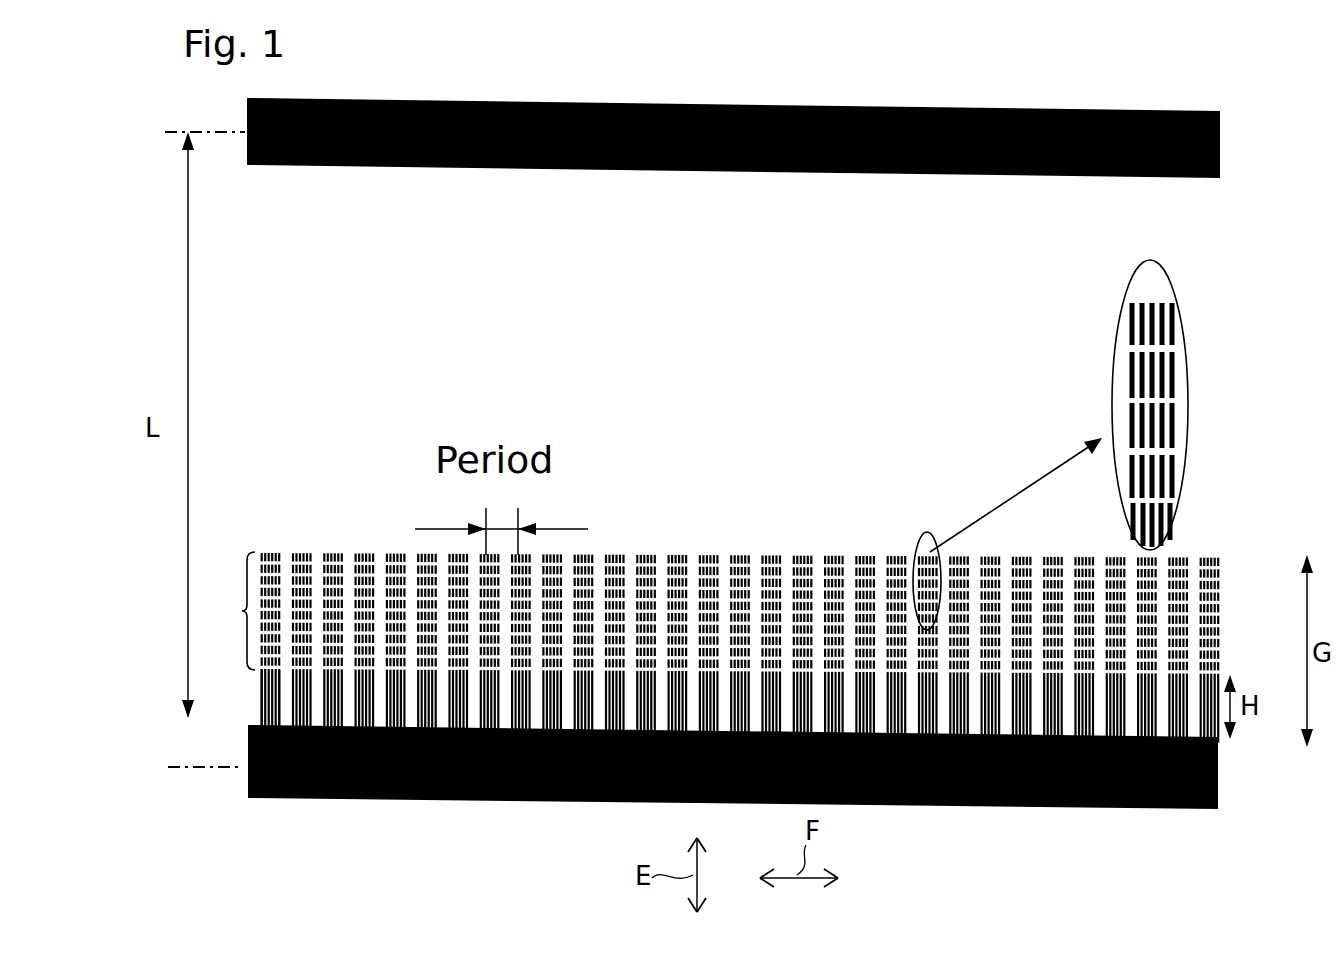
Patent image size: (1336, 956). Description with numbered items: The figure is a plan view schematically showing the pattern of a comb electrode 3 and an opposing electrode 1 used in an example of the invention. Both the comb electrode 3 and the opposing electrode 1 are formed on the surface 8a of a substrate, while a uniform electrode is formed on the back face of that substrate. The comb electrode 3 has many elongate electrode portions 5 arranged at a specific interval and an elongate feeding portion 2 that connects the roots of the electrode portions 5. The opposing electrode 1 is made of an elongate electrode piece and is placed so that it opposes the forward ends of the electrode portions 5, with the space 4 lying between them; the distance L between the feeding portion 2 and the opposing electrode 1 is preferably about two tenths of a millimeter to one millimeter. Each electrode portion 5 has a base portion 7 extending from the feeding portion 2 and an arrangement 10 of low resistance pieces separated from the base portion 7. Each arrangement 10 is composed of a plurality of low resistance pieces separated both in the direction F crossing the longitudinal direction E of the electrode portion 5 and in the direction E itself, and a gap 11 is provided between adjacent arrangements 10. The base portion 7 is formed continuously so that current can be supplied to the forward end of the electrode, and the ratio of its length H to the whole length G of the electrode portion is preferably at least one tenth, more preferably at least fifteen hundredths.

The opposing electrode 1 is at (1220, 122).
The feeding portion 2 is at (1218, 788).
The comb electrode 3 is at (747, 605).
The gap space 4 is at (752, 330).
The electrode portion 5 is at (276, 529).
The base portion 7 is at (258, 700).
The surface 8a is at (1292, 409).
The arrangement of low resistance pieces 10 is at (232, 611).
The gap 11 is at (758, 555).